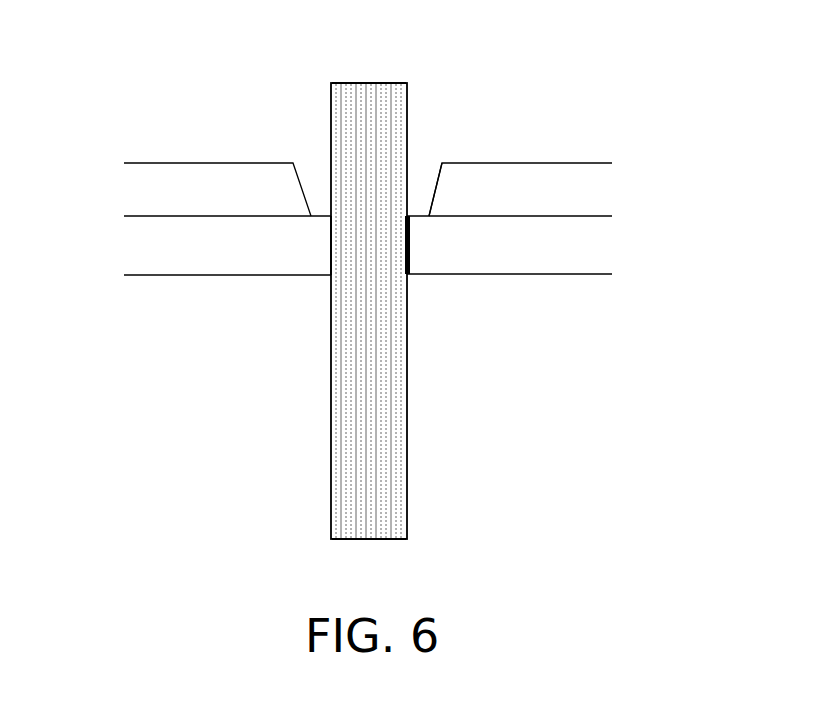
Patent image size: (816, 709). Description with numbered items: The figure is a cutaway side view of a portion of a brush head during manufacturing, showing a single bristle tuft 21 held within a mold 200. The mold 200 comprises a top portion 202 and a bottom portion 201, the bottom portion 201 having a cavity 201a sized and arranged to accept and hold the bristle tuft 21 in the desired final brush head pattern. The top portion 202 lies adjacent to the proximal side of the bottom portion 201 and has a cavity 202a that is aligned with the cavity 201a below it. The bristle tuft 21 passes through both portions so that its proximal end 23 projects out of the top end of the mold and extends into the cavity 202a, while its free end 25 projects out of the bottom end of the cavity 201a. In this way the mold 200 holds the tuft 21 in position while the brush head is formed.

The bristle tuft 21 is at (331, 474).
The proximal end 23 is at (350, 83).
The free end 25 is at (331, 533).
The mold 200 is at (650, 210).
The bottom portion 201 is at (147, 248).
The cavity 201a is at (330, 277).
The top portion 202 is at (147, 188).
The cavity of top portion 202a is at (424, 188).